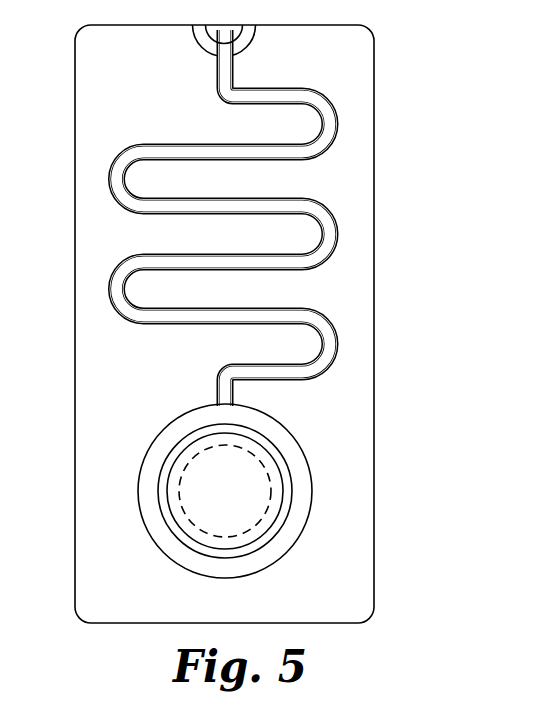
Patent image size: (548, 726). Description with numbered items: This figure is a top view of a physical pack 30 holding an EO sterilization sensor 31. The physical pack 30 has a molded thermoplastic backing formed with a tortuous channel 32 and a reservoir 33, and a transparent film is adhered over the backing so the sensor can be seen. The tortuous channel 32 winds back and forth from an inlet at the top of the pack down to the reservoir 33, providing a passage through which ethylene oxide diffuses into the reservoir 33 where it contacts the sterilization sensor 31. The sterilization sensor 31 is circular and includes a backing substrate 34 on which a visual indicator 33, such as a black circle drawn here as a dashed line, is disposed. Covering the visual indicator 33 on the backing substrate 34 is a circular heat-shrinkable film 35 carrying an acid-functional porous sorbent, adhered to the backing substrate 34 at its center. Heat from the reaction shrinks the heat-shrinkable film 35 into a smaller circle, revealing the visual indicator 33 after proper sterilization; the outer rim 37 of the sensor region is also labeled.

The physical pack 30 is at (421, 40).
The EO sterilization sensor 31 is at (297, 461).
The tortuous channel 32 is at (333, 107).
The visual indicator 33 is at (180, 507).
The backing substrate 34 is at (282, 515).
The heat-shrinkable film 35 is at (177, 470).
The outer rim of sensing region 37 is at (282, 428).